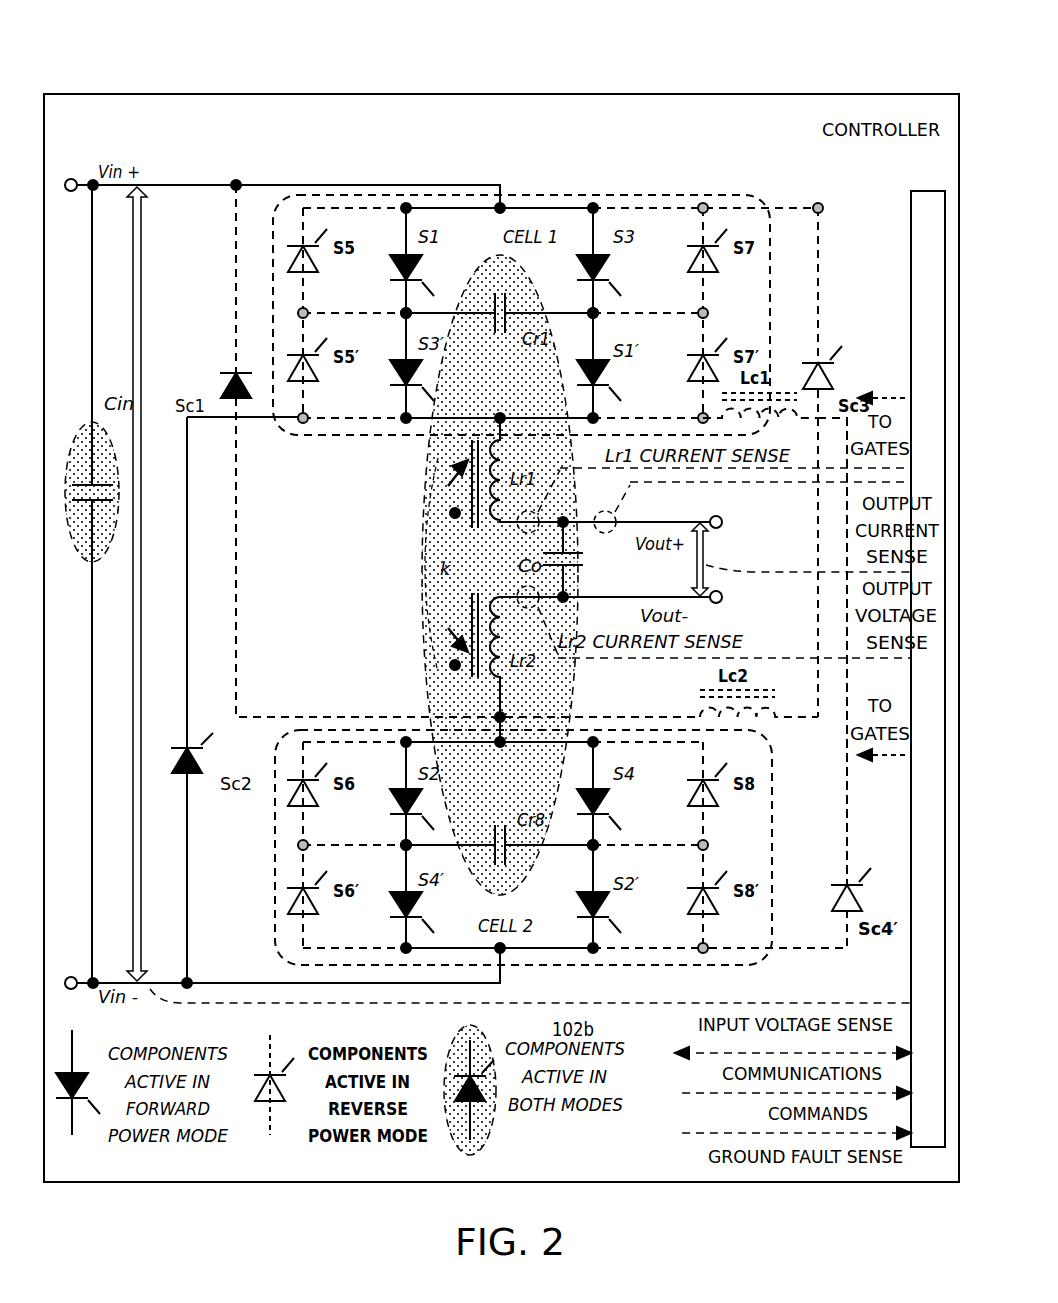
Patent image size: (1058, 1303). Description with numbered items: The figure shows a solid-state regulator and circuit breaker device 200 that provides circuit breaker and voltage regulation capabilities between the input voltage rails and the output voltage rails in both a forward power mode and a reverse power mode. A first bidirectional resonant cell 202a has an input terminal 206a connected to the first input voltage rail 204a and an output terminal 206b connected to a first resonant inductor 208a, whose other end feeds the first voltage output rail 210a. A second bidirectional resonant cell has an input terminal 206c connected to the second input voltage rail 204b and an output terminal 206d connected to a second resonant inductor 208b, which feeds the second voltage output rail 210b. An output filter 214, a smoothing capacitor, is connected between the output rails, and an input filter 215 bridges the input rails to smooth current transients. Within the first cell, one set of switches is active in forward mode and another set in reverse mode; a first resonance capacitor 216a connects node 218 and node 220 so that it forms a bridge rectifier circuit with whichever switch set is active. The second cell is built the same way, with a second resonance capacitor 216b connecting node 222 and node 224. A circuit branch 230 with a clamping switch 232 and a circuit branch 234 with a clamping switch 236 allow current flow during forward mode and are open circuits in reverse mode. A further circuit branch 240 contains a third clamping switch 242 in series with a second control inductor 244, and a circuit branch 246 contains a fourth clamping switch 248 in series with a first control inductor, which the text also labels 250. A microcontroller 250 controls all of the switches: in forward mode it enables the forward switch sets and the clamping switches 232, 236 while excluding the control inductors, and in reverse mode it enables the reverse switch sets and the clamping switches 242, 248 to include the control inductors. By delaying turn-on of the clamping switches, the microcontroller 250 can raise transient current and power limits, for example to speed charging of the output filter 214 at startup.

The solid-state regulator and circuit breaker device 200 is at (775, 69).
The first bidirectional resonant cell 202a is at (597, 195).
The first input voltage rail 204a is at (145, 182).
The second input voltage rail 204b is at (93, 976).
The input terminal 206a is at (502, 205).
The output terminal 206b is at (503, 416).
The input terminal 206c is at (500, 953).
The output terminal 206d is at (500, 745).
The first resonant inductor 208a is at (487, 510).
The second resonant inductor 208b is at (487, 632).
The first voltage output rail 210a is at (716, 516).
The second voltage output rail 210b is at (722, 600).
The output filter 214 is at (585, 565).
The input filter 215 is at (88, 483).
The first resonance capacitor 216a is at (497, 296).
The second resonance capacitor 216b is at (505, 852).
The node 218 is at (400, 311).
The node 220 is at (598, 316).
The node 222 is at (400, 845).
The node 224 is at (598, 848).
The circuit branch 230 is at (232, 240).
The clamping switch 232 is at (222, 380).
The circuit branch 234 is at (190, 866).
The clamping switch 236 is at (205, 760).
The circuit branch 240 is at (822, 283).
The third clamping switch 242 is at (838, 372).
The second control inductor 244 is at (700, 697).
The circuit branch 246 is at (848, 812).
The fourth clamping switch 248 is at (838, 890).
The microcontroller 250 is at (918, 204).